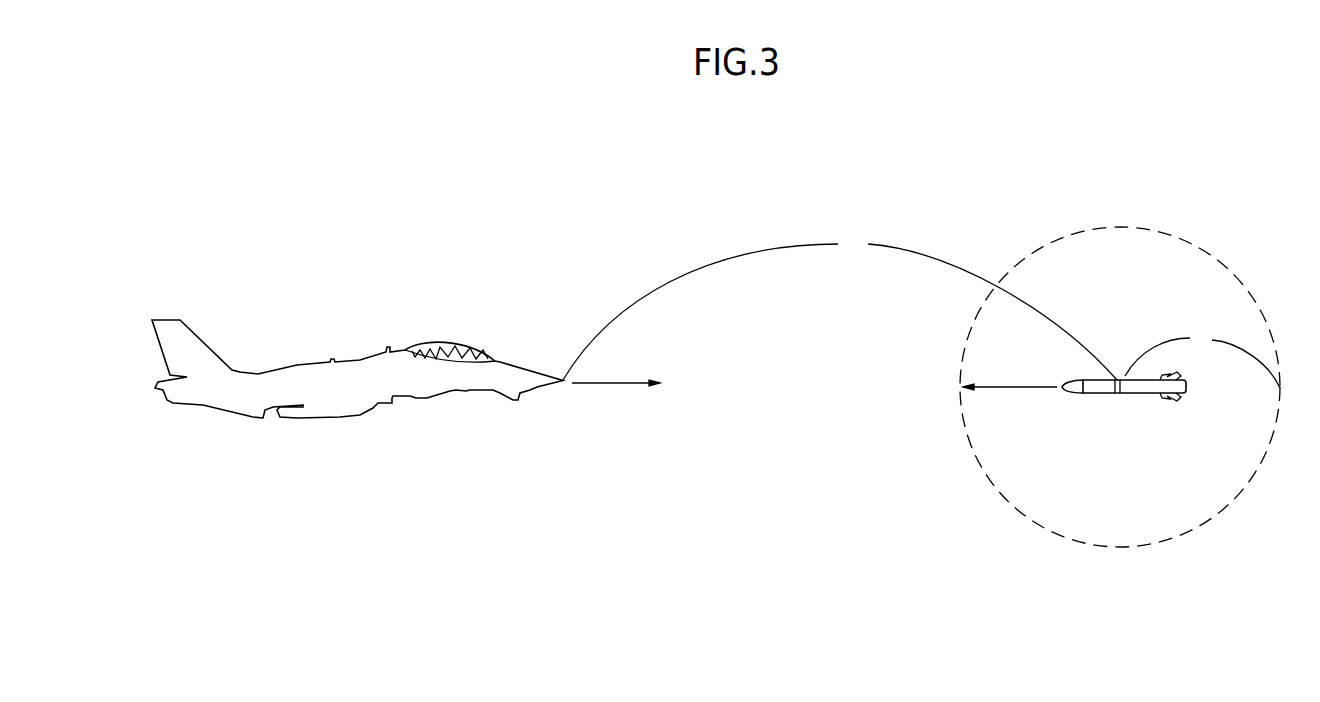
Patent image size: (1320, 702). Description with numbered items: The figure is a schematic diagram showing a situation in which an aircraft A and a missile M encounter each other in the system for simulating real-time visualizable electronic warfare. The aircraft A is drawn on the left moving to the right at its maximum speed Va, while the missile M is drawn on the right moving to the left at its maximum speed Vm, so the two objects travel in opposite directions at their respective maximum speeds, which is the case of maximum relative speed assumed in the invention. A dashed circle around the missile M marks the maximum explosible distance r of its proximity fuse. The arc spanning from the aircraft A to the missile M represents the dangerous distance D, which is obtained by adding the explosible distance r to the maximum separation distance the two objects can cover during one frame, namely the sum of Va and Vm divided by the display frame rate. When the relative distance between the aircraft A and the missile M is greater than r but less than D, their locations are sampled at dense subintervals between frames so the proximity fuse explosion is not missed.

The aircraft A is at (363, 358).
The missile M is at (1133, 397).
The dangerous distance D is at (840, 306).
The maximum explosible distance of the proximity fuse r is at (1120, 387).
The maximum speed of the aircraft Va is at (616, 400).
The maximum speed of the missile Vm is at (1010, 403).